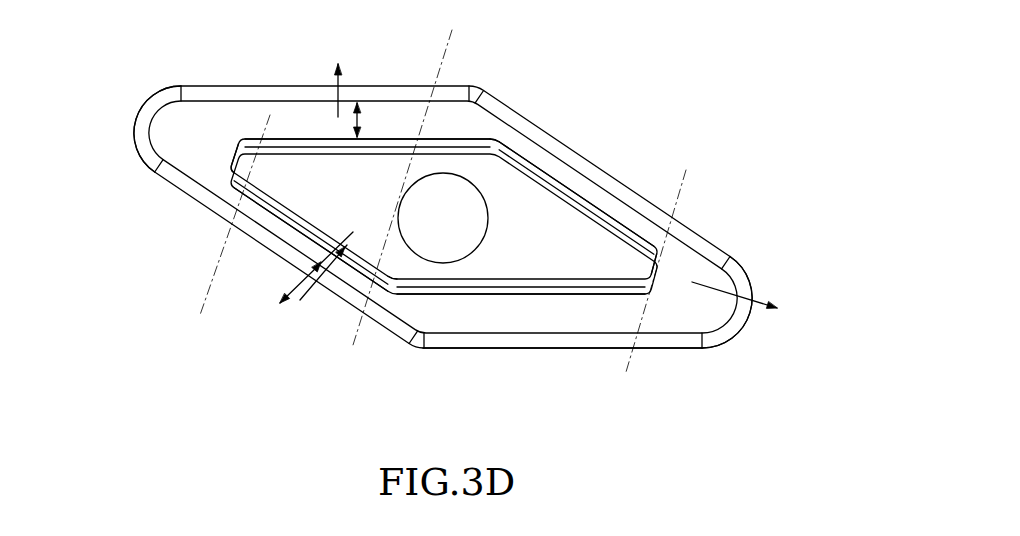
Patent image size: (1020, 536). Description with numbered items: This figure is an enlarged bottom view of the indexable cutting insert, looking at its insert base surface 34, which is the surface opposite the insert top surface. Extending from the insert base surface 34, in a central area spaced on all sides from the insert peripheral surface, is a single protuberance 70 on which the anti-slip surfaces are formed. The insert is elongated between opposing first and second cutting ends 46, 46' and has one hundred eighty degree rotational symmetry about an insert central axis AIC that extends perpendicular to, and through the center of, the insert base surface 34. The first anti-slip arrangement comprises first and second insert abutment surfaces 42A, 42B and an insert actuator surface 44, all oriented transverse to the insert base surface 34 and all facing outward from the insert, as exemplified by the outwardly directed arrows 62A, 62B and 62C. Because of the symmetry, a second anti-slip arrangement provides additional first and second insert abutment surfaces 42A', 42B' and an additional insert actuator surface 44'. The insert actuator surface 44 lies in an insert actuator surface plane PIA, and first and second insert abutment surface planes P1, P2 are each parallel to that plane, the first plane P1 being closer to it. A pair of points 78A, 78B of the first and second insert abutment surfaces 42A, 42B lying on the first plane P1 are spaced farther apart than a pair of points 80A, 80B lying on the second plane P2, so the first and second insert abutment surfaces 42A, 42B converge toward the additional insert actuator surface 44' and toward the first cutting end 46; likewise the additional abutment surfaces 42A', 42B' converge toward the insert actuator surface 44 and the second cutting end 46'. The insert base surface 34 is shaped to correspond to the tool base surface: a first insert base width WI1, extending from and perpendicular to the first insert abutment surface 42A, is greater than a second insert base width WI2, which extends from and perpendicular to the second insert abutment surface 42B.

The insert base surface 34 is at (595, 315).
The protuberance 70 is at (457, 307).
The first cutting end 46 is at (115, 120).
The second cutting end 46' is at (770, 315).
The first insert abutment surface 42A is at (367, 93).
The additional second insert abutment surface 42B' is at (576, 185).
The additional first insert abutment surface 42A' is at (521, 345).
The second insert abutment surface 42B is at (311, 292).
The insert actuator surface 44 is at (680, 289).
The additional insert actuator surface 44' is at (178, 178).
The point of first insert abutment surface on first plane 78A is at (430, 137).
The point of second insert abutment surface on first plane 78B is at (373, 288).
The point of first insert abutment surface on second plane 80A is at (272, 133).
The point of second insert abutment surface on second plane 80B is at (247, 195).
The outwardly directed arrow 62A is at (338, 95).
The outwardly directed arrow 62B is at (312, 272).
The outwardly directed arrow 62C is at (707, 285).
The first insert base width WI1 is at (364, 105).
The second insert base width WI2 is at (308, 292).
The first insert abutment surface plane P1 is at (412, 178).
The second insert abutment surface plane P2 is at (227, 226).
The insert actuator surface plane PIA is at (666, 287).
The insert central axis AIC is at (443, 215).